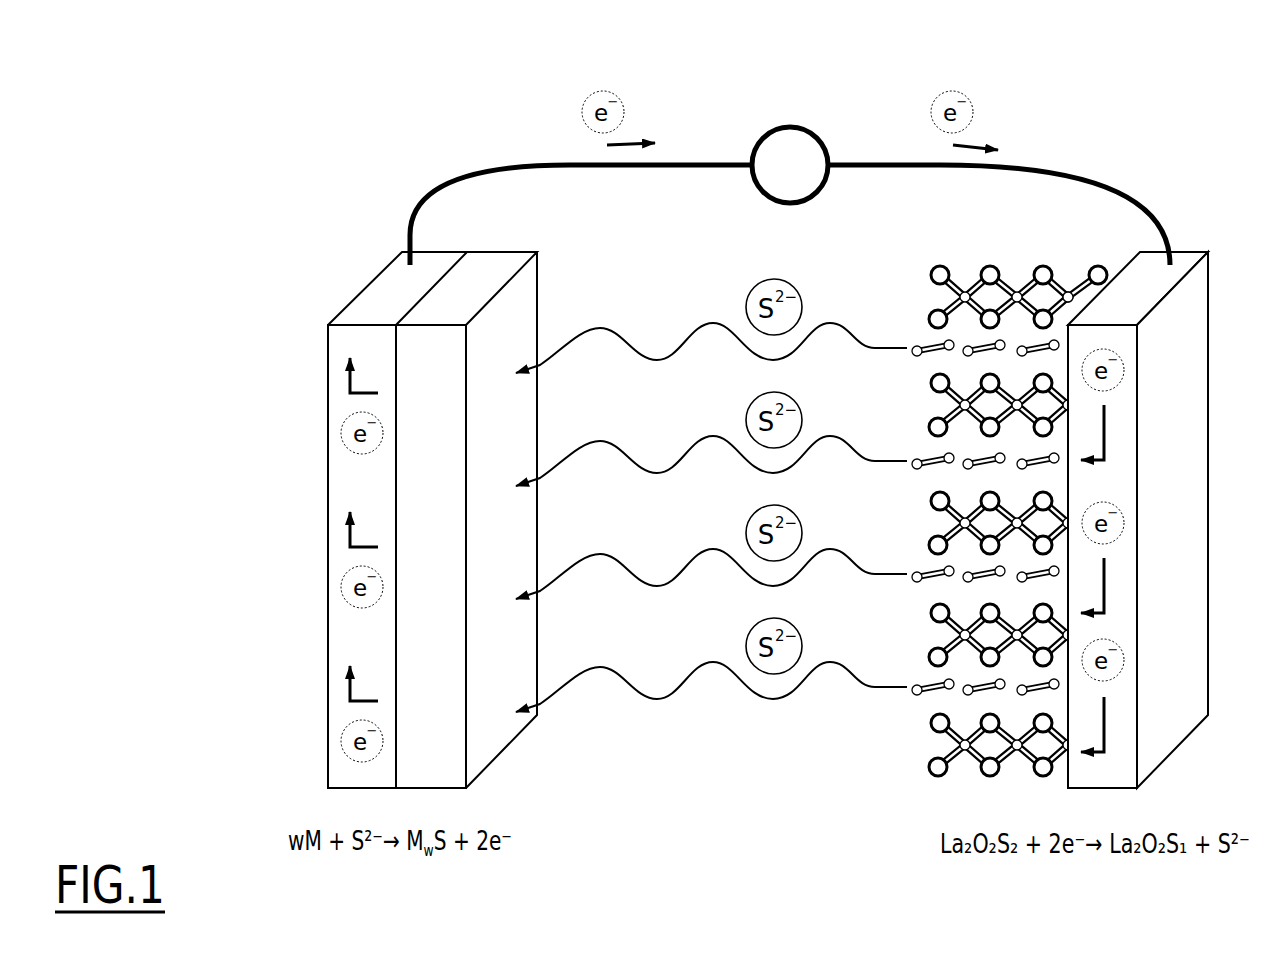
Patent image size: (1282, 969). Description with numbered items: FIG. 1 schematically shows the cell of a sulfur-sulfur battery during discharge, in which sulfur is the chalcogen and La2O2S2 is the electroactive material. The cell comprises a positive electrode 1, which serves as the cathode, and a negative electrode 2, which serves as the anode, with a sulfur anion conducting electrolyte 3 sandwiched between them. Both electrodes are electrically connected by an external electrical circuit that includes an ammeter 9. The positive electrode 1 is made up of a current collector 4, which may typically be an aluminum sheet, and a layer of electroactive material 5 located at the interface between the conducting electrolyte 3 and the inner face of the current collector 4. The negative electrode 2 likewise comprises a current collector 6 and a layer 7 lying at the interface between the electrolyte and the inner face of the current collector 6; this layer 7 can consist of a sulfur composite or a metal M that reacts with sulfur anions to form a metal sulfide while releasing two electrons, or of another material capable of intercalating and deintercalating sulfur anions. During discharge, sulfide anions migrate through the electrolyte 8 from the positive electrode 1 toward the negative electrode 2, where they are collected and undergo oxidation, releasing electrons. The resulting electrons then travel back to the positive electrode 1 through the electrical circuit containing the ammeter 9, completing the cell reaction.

The positive electrode 1 is at (1208, 83).
The negative electrode 2 is at (327, 83).
The sulfur anion conducting electrolyte 3 is at (975, 83).
The current collector 4 is at (1186, 757).
The layer of electroactive material 5 is at (910, 778).
The current collector 6 is at (316, 558).
The layer 7 is at (502, 774).
The electrolyte 8 is at (749, 712).
The ammeter 9 is at (746, 196).